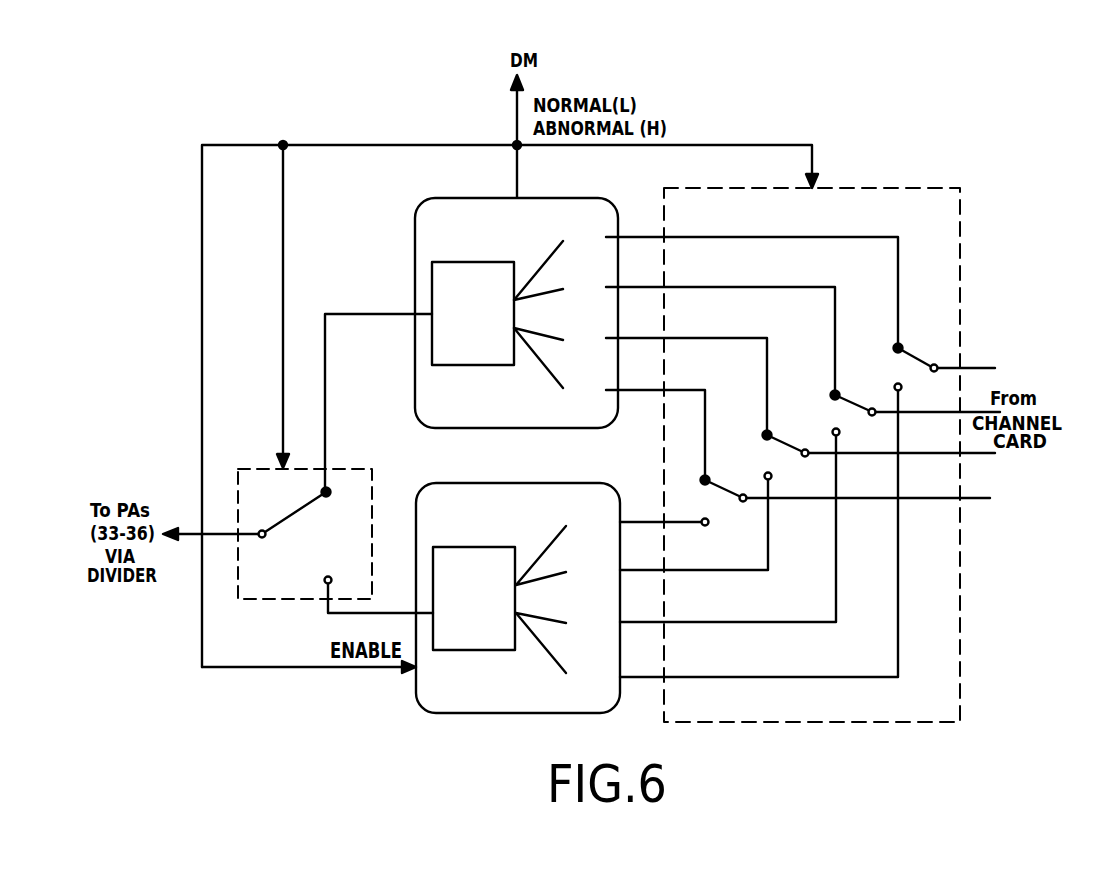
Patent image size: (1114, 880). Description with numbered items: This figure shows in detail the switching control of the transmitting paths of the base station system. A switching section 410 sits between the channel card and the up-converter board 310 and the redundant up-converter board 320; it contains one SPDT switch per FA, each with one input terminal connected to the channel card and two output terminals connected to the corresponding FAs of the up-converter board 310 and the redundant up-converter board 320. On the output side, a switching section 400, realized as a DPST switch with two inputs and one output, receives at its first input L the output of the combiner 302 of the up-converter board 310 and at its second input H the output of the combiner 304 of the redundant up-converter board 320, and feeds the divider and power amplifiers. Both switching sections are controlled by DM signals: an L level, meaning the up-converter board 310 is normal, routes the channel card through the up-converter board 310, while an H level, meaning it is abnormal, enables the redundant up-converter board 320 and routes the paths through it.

The up-converter board 310 is at (534, 293).
The combiner 302 is at (473, 313).
The redundant up-converter board 320 is at (531, 578).
The combiner 304 is at (474, 598).
The switching section 400 is at (253, 469).
The switching section 410 is at (912, 188).